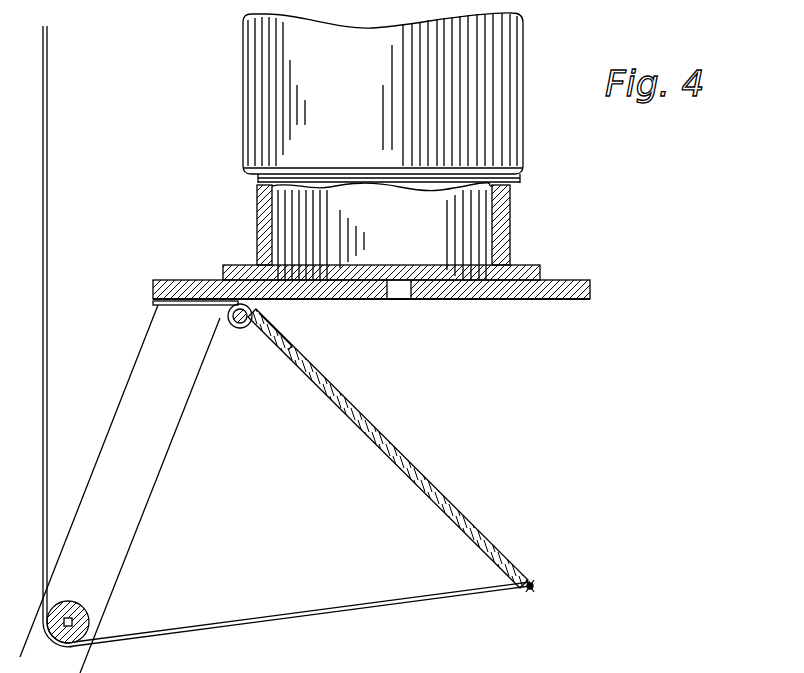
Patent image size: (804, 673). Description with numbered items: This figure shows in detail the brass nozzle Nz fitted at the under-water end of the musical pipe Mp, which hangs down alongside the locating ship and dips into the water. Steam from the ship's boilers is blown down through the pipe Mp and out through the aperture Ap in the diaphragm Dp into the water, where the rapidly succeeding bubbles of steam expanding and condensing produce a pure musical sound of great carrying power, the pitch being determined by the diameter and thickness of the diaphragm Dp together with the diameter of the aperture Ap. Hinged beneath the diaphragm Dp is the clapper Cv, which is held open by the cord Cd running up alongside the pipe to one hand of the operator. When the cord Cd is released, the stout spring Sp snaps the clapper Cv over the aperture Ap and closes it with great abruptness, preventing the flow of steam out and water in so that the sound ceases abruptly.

The musical pipe Mp is at (518, 78).
The nozzle Nz is at (410, 231).
The aperture Ap is at (388, 292).
The diaphragm Dp is at (486, 300).
The spring Sp is at (235, 332).
The clapper Cv is at (497, 546).
The cord Cd is at (49, 157).